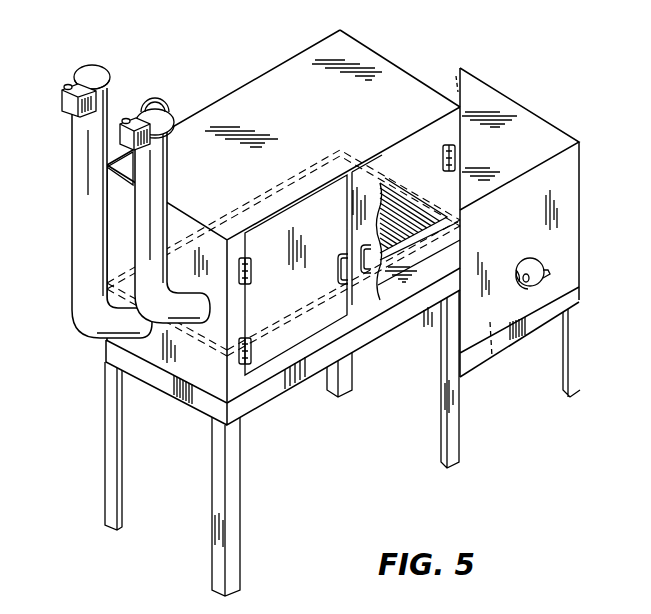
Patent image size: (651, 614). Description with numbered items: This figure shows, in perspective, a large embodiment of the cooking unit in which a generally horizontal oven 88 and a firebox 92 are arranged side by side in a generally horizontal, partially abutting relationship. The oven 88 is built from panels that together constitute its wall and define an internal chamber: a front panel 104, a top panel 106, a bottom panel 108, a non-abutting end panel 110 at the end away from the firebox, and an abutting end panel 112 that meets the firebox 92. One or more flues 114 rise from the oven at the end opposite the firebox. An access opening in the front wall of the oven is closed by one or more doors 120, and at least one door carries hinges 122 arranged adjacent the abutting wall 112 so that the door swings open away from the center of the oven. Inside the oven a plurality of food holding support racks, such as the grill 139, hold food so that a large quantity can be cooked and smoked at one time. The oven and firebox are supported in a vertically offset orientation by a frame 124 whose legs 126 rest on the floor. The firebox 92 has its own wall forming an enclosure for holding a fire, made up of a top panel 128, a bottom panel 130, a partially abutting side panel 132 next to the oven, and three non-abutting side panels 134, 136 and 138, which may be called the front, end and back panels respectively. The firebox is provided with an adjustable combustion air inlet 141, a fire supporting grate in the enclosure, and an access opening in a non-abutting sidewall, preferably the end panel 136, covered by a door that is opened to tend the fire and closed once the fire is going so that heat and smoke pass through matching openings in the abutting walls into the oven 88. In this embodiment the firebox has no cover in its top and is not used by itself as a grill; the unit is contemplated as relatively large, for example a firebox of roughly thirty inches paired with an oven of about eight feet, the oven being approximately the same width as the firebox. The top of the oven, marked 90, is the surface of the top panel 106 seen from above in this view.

The oven 88 is at (258, 62).
The cabinet top 90 is at (224, 113).
The firebox 92 is at (545, 62).
The front panel 104 is at (250, 238).
The top panel 106 is at (358, 55).
The bottom panel 108 is at (213, 413).
The non-abutting end panel 110 is at (118, 248).
The abutting end panel 112 is at (400, 70).
The flue 114 is at (140, 188).
The door 120 is at (353, 308).
The hinges 122 is at (443, 160).
The frame 124 is at (175, 392).
The legs 126 is at (105, 498).
The top panel 128 is at (533, 120).
The bottom panel 130 is at (492, 357).
The partially abutting side panel 132 is at (433, 335).
The non-abutting side panel (front panel) 134 is at (572, 252).
The non-abutting side panel (end panel) 136 is at (565, 185).
The non-abutting side panel (back panel) 138 is at (460, 52).
The grill 139 is at (445, 200).
The adjustable combustion air inlet 141 is at (520, 263).